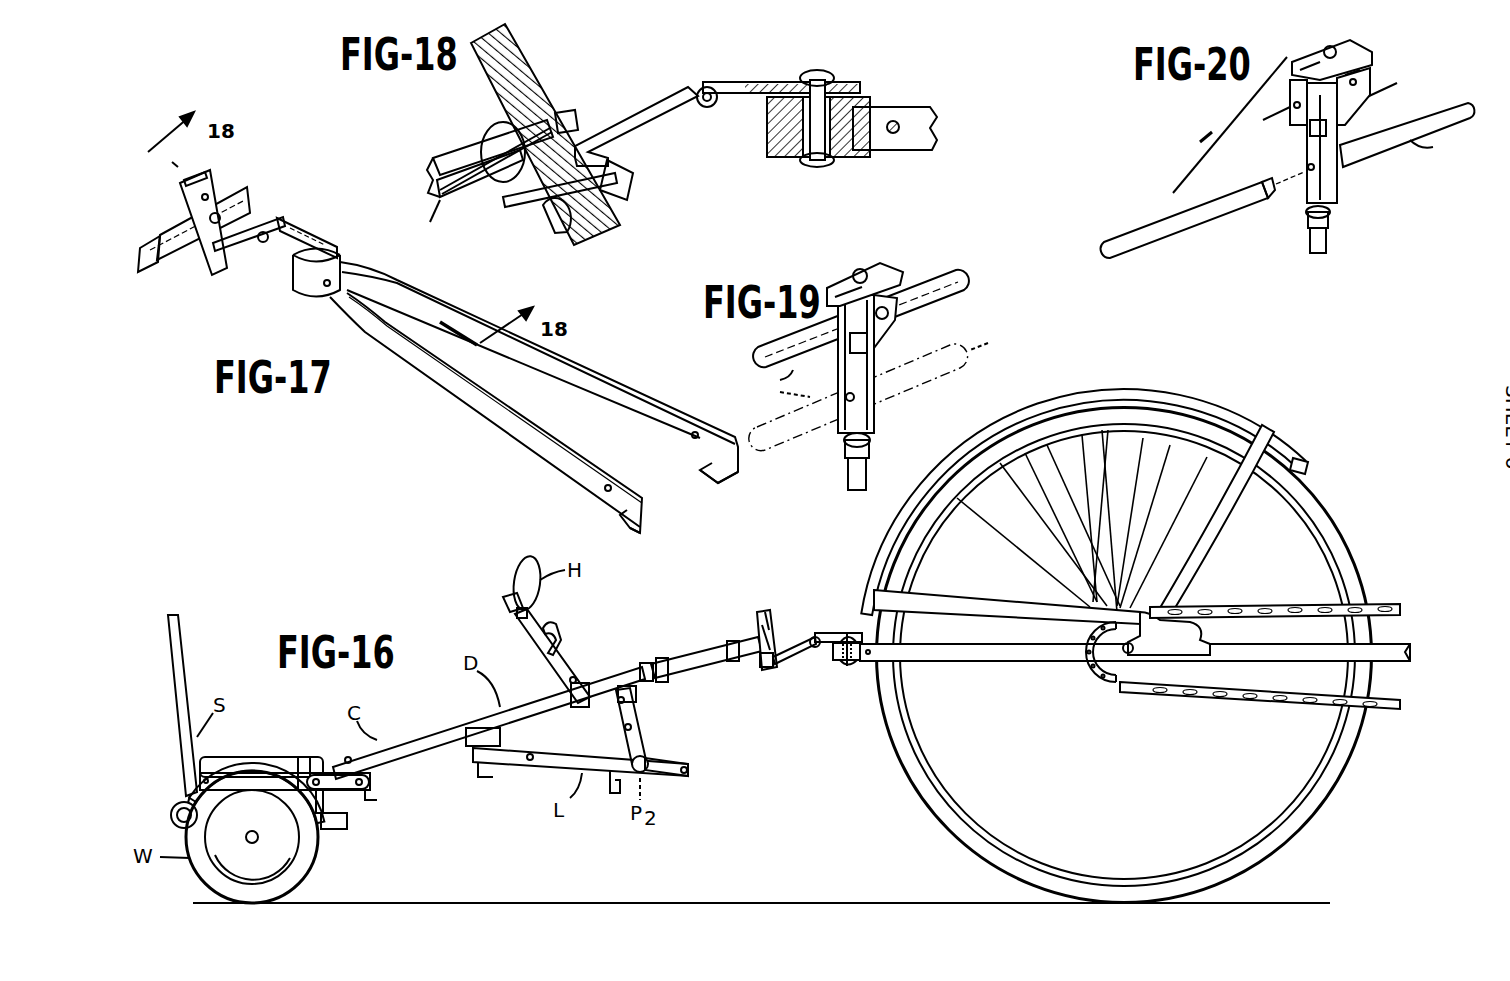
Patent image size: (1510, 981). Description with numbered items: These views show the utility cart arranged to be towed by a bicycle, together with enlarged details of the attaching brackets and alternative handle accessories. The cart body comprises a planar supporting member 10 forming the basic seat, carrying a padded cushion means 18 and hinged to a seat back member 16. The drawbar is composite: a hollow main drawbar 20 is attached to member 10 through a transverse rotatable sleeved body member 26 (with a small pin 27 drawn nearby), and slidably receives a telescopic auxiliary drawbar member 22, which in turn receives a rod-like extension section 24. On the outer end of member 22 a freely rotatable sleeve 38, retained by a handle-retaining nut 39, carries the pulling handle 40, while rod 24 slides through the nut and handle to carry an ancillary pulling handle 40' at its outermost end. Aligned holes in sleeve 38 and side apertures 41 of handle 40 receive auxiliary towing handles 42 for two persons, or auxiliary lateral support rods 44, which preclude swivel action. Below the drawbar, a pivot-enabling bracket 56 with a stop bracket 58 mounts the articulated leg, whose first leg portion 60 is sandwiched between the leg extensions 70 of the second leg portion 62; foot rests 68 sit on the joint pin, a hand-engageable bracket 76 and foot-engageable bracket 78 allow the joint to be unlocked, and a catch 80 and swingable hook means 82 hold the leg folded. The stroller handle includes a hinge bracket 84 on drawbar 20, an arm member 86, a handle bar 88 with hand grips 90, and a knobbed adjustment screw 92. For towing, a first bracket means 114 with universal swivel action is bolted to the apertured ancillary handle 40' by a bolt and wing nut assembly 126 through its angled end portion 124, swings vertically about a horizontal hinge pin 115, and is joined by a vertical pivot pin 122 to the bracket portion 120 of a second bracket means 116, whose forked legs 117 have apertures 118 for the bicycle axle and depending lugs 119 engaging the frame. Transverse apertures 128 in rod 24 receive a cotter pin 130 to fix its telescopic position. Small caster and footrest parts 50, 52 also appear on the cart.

In FIG. 16, the planar supporting member 10 is at (306, 760).
In FIG. 16, the seat back 16 is at (176, 683).
In FIG. 16, the padded cushion means 18 is at (240, 757).
In FIG. 16, the main drawbar 20 is at (417, 723).
In FIG. 19, the main drawbar 20 is at (847, 477).
In FIG. 20, the main drawbar 20 is at (1327, 238).
In FIG. 19, the auxiliary drawbar member 22 is at (843, 442).
In FIG. 20, the auxiliary drawbar member 22 is at (1307, 220).
In FIG. 18, the rod-like extension section 24 is at (427, 192).
In FIG. 16, the rotatable sleeved body member 26 is at (372, 782).
In FIG. 16, the pin 27 is at (374, 800).
In FIG. 16, the rotatable sleeve 38 is at (680, 654).
In FIG. 18, the rotatable sleeve 38 is at (440, 200).
In FIG. 19, the rotatable sleeve 38 is at (872, 417).
In FIG. 20, the rotatable sleeve 38 is at (1335, 187).
In FIG. 19, the handle-retaining nut 39 is at (877, 350).
In FIG. 20, the handle-retaining nut 39 is at (1308, 135).
In FIG. 16, the pulling handle 40 is at (740, 629).
In FIG. 18, the pulling handle 40 is at (530, 171).
In FIG. 19, the pulling handle 40 is at (923, 321).
In FIG. 20, the pulling handle 40 is at (1357, 50).
In FIG. 16, the ancillary pulling handle 40' is at (762, 595).
In FIG. 18, the ancillary pulling handle 40' is at (545, 134).
In FIG. 19, the ancillary pulling handle 40' is at (867, 259).
In FIG. 20, the side apertures 41 is at (1367, 77).
In FIG. 19, the auxiliary towing handles 42 is at (967, 282).
In FIG. 20, the auxiliary lateral support rods 44 is at (1217, 217).
In FIG. 16, the caster wheel 50 is at (172, 810).
In FIG. 16, the footrest bracket 52 is at (328, 833).
In FIG. 16, the pivot-enabling bracket 56 is at (621, 686).
In FIG. 16, the stop bracket 58 is at (637, 692).
In FIG. 16, the first leg portion 60 is at (637, 713).
In FIG. 16, the second leg portion 62 is at (590, 757).
In FIG. 16, the foot rests 68 is at (648, 772).
In FIG. 16, the leg extensions 70 is at (668, 760).
In FIG. 16, the hand-engageable bracket 76 is at (617, 794).
In FIG. 16, the foot-engageable bracket 78 is at (480, 780).
In FIG. 16, the catch 80 is at (530, 762).
In FIG. 16, the swingable hook means 82 is at (503, 731).
In FIG. 16, the hinge bracket 84 is at (588, 683).
In FIG. 16, the arm member 86 is at (553, 663).
In FIG. 16, the handle bar 88 is at (517, 615).
In FIG. 16, the hand grips 90 is at (538, 563).
In FIG. 16, the knobbed adjustment screw 92 is at (515, 600).
In FIG. 16, the first bracket means 114 is at (822, 620).
In FIG. 17, the first bracket means 114 is at (252, 270).
In FIG. 18, the first bracket means 114 is at (747, 74).
In FIG. 16, the horizontal hinge pin 115 is at (812, 637).
In FIG. 18, the horizontal hinge pin 115 is at (700, 87).
In FIG. 16, the second bracket means 116 is at (1012, 668).
In FIG. 17, the second bracket means 116 is at (470, 419).
In FIG. 16, the legs 117 is at (970, 663).
In FIG. 17, the legs 117 is at (560, 372).
In FIG. 16, the apertures 118 is at (1093, 675).
In FIG. 17, the apertures 118 is at (690, 436).
In FIG. 18, the apertures 118 is at (917, 107).
In FIG. 16, the depending lugs 119 is at (1167, 692).
In FIG. 17, the depending lugs 119 is at (703, 482).
In FIG. 16, the bracket portion 120 is at (850, 666).
In FIG. 17, the bracket portion 120 is at (310, 272).
In FIG. 18, the bracket portion 120 is at (837, 153).
In FIG. 16, the pivot pin 122 is at (848, 630).
In FIG. 18, the pivot pin 122 is at (823, 80).
In FIG. 16, the hinge plate 124 is at (791, 664).
In FIG. 18, the hinge plate 124 is at (603, 153).
In FIG. 16, the bolt and wing nut assembly 126 is at (763, 665).
In FIG. 18, the bolt and wing nut assembly 126 is at (620, 187).
In FIG. 18, the transverse apertures 128 is at (447, 157).
In FIG. 18, the cotter pin 130 is at (473, 152).